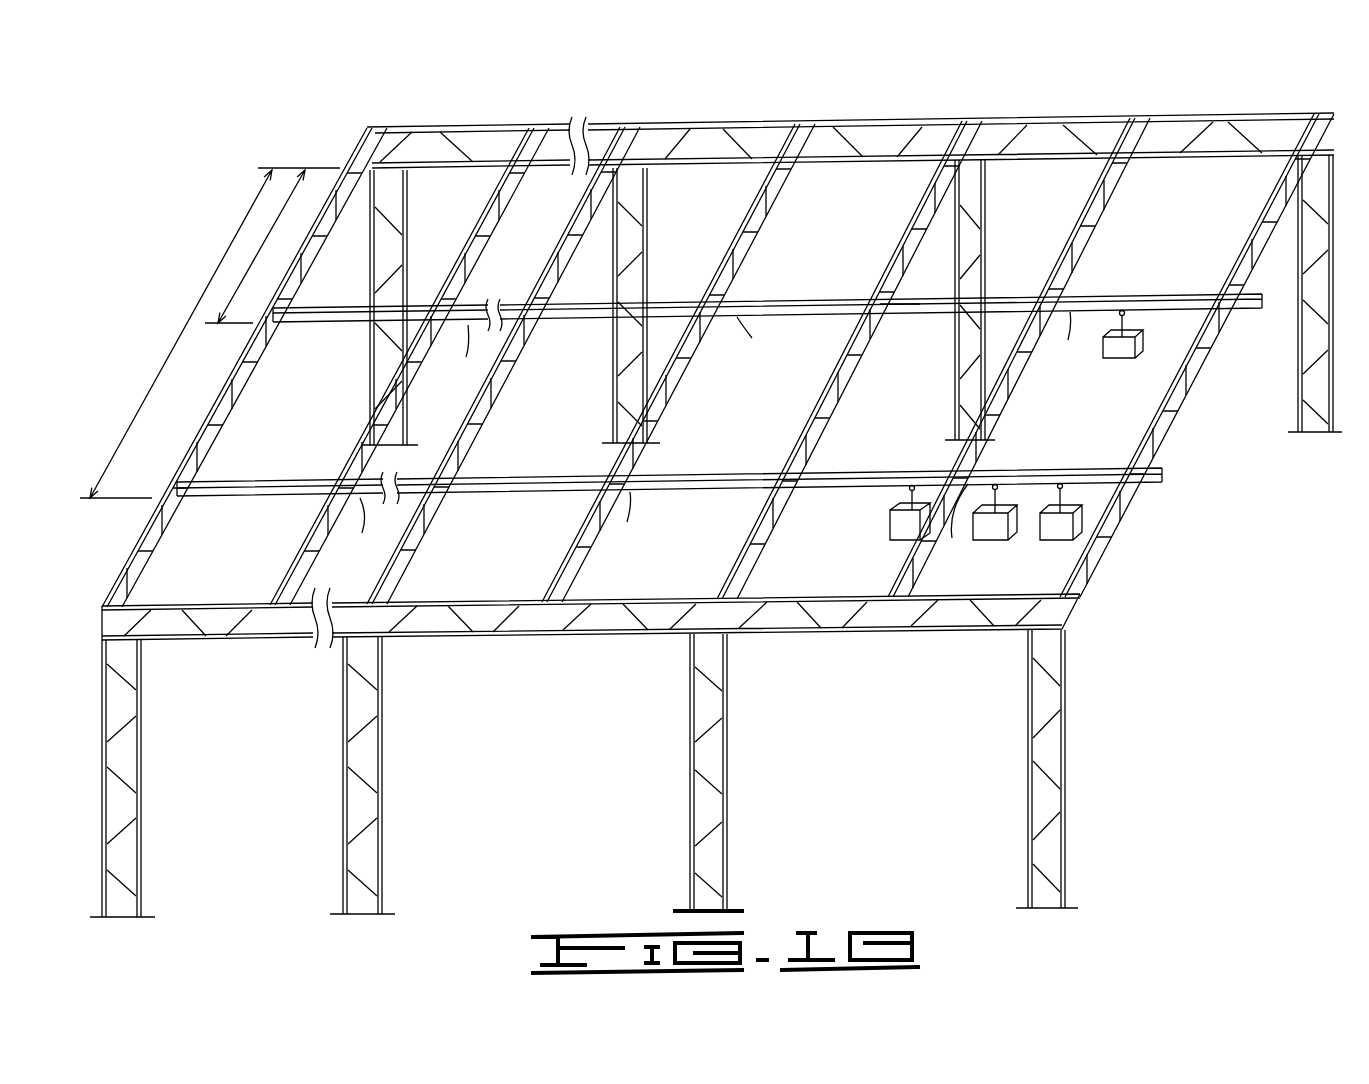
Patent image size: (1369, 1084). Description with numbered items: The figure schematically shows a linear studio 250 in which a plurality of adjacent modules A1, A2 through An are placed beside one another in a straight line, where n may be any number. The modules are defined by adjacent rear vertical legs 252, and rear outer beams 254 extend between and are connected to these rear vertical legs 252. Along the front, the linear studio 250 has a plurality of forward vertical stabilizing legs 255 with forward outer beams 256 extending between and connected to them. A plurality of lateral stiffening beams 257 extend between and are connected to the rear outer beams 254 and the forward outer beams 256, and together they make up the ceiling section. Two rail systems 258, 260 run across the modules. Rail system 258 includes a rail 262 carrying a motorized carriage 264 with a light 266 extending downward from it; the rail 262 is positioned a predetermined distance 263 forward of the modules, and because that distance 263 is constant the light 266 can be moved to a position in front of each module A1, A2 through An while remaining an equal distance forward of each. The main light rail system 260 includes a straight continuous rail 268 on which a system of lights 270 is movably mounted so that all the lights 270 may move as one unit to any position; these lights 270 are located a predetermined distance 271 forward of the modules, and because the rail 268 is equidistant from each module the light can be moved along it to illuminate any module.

The linear studio 250 is at (1010, 105).
The rear vertical leg 252 is at (408, 204).
The rear outer beam 254 is at (440, 127).
The forward vertical stabilizing leg 255 is at (141, 817).
The forward outer beam 256 is at (177, 640).
The lateral stiffening beam 257 is at (1130, 200).
The rail system 258 is at (770, 301).
The main light rail system 260 is at (678, 489).
The rail 262 is at (900, 313).
The predetermined distance 263 is at (261, 247).
The motorized carriage 264 is at (1123, 310).
The light 266 is at (1118, 352).
The rail 268 is at (805, 487).
The light 270 is at (890, 537).
The predetermined distance 271 is at (176, 363).
The module An is at (495, 127).
The module A2 is at (905, 124).
The module A1 is at (1110, 120).